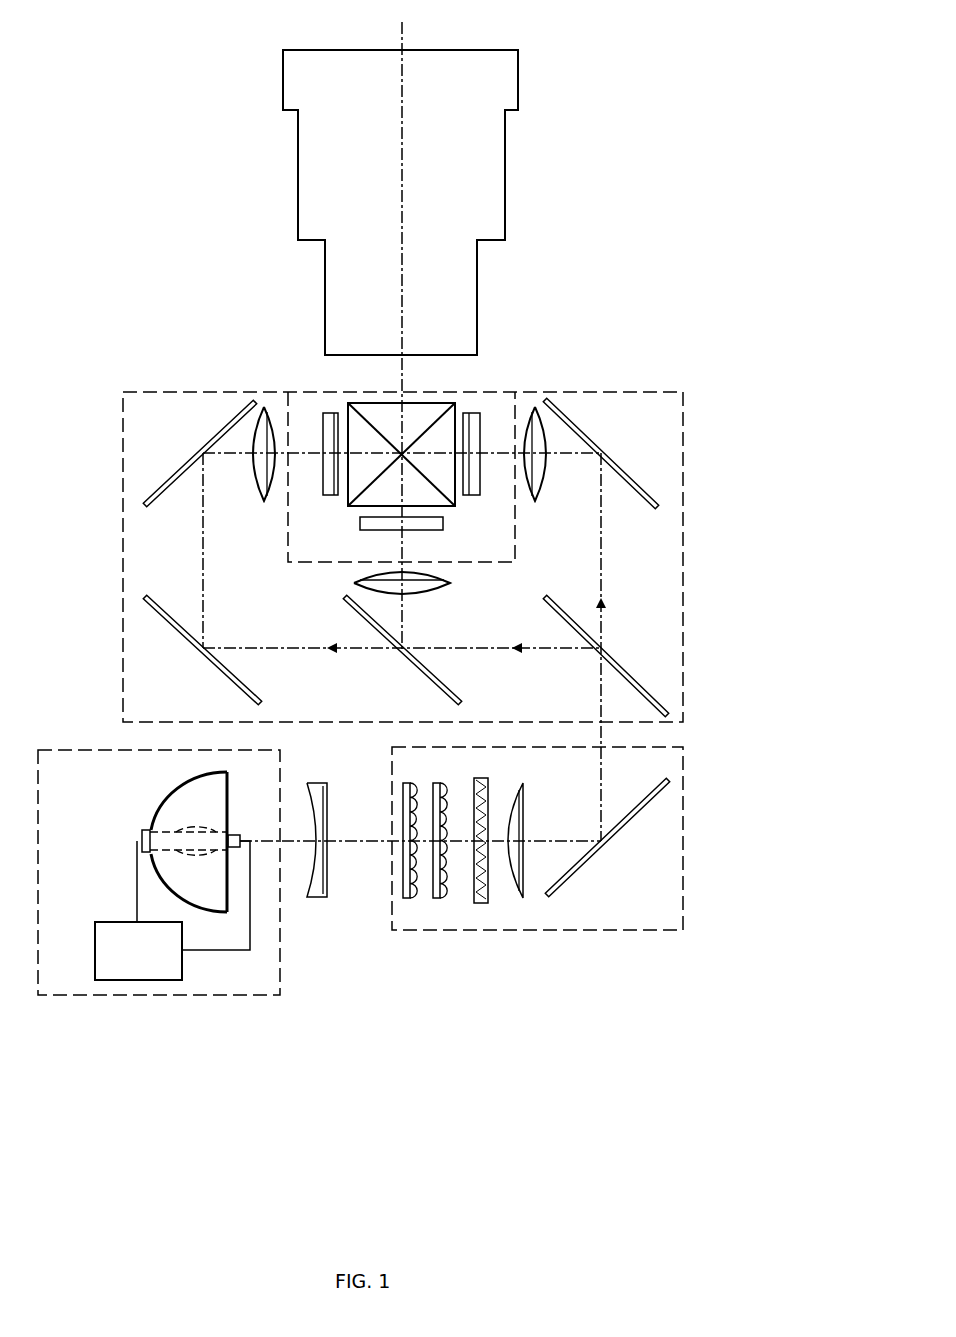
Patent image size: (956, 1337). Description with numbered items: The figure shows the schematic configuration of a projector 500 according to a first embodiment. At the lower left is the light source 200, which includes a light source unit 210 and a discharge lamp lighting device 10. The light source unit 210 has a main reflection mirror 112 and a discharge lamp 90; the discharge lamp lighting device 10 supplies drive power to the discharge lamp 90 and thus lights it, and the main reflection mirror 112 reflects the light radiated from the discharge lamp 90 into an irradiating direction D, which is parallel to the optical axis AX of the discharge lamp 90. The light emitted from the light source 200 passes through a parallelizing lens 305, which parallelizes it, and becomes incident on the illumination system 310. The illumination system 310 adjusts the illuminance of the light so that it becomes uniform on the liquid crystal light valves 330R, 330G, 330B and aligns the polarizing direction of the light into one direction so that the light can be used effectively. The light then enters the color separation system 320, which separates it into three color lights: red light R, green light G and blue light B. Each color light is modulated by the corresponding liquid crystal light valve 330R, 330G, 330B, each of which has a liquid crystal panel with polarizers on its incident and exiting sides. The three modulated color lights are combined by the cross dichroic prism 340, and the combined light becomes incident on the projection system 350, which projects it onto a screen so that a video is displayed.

The projector 500 is at (596, 34).
The projection system 350 is at (505, 203).
The cross dichroic prism 340 is at (391, 403).
The liquid crystal light valve 330R is at (470, 413).
The liquid crystal light valve 330G is at (430, 530).
The liquid crystal light valve 330B is at (333, 496).
The color separation system 320 is at (683, 703).
The illumination system 310 is at (683, 893).
The parallelizing lens 305 is at (312, 897).
The light source 200 is at (128, 995).
The light source unit 210 is at (154, 837).
The main reflection mirror 112 is at (165, 806).
The discharge lamp 90 is at (232, 835).
The discharge lamp lighting device 10 is at (95, 957).
The optical axis AX is at (368, 843).
The blue light B is at (203, 573).
The red light R is at (601, 570).
The green light G is at (403, 606).
The irradiating direction D is at (253, 1017).